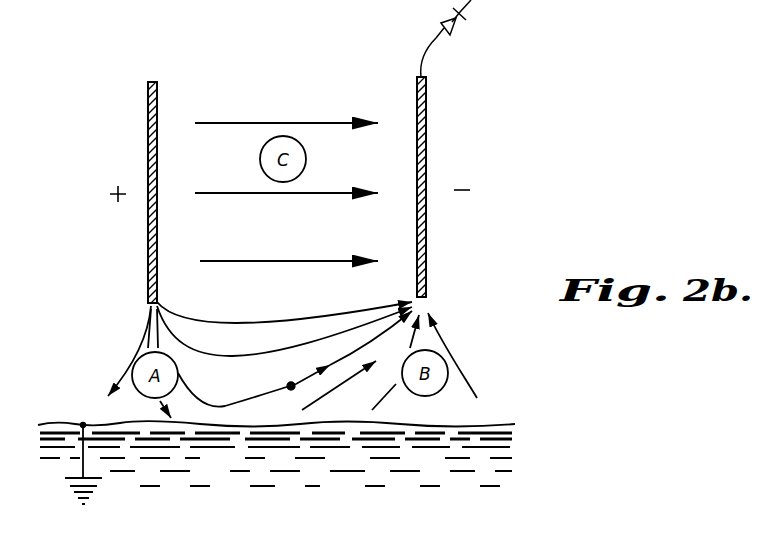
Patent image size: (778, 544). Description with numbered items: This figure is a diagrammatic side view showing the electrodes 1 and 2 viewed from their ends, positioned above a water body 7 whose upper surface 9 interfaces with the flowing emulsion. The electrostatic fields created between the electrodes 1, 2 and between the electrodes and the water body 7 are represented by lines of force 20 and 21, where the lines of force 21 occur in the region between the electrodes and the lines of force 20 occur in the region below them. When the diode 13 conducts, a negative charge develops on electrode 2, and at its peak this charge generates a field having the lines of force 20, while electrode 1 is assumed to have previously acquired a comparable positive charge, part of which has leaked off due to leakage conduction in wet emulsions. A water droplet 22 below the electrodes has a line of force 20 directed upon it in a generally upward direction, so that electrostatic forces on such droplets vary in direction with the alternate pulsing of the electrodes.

The electrode 1 is at (150, 121).
The electrode 2 is at (426, 121).
The water body 7 is at (490, 430).
The upper surface 9 is at (427, 421).
The diode 13 is at (454, 30).
The lines of force 20 is at (380, 336).
The lines of force 21 is at (280, 122).
The water droplet 22 is at (291, 390).